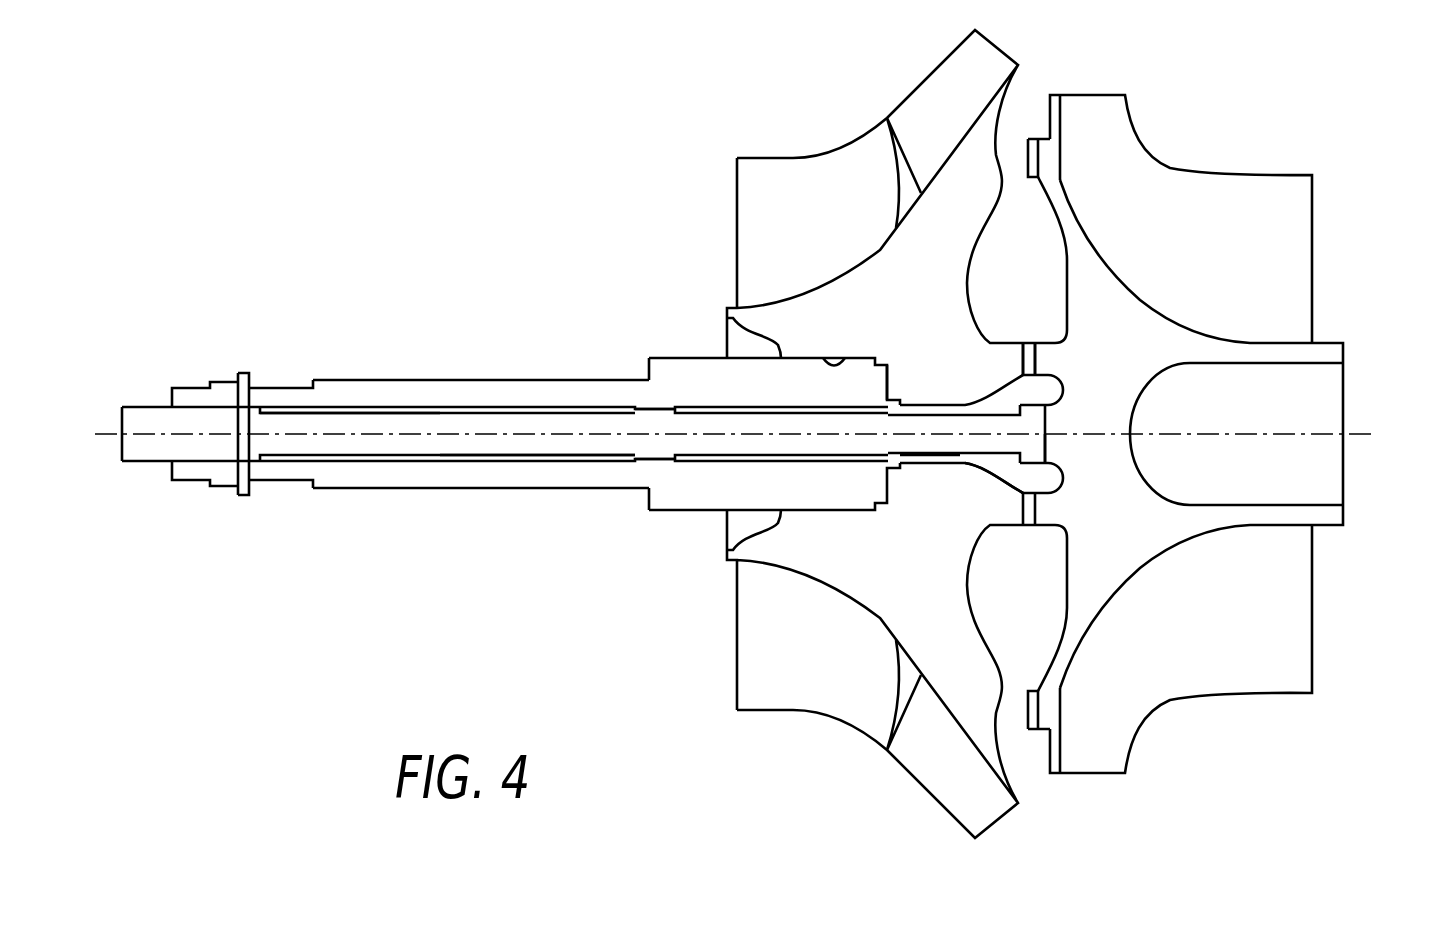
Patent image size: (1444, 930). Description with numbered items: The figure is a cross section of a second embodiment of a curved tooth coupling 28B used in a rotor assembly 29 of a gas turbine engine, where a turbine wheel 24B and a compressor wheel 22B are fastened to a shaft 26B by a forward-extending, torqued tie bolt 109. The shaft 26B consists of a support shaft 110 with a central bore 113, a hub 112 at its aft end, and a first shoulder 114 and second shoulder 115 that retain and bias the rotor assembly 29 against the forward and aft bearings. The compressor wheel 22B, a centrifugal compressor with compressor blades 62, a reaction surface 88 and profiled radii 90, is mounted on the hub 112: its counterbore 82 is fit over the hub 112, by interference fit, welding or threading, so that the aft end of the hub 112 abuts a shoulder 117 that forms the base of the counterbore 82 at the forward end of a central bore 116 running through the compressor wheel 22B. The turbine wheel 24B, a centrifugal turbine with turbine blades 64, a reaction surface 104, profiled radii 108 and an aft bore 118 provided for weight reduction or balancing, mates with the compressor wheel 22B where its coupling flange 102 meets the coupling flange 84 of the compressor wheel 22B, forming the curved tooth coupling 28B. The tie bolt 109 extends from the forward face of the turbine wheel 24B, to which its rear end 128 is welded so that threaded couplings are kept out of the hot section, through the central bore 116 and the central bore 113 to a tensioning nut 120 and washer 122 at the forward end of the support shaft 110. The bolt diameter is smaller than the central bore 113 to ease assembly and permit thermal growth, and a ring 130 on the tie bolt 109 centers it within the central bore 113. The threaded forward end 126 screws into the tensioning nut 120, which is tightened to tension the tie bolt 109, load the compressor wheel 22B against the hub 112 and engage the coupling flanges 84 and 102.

The rotor assembly 29 is at (1349, 182).
The compressor blades 62 is at (777, 180).
The turbine blades 64 is at (1160, 175).
The reaction surface 88 is at (876, 250).
The counterbore 82 is at (847, 357).
The coupling flange 84 is at (1012, 365).
The curved tooth coupling 28B is at (1031, 336).
The coupling flange 102 is at (1058, 368).
The reaction surface 104 is at (1120, 270).
The profiled radii 108 is at (1063, 388).
The shoulder 117 is at (887, 392).
The central bore 116 is at (970, 452).
The profiled radii 90 is at (1003, 480).
The rear end 128 is at (1032, 453).
The turbine wheel 24B is at (1337, 347).
The aft bore 118 is at (1322, 365).
The forward end 126 is at (138, 413).
The first shoulder 114 is at (308, 382).
The support shaft 110 is at (360, 392).
The central bore 113 is at (437, 418).
The second shoulder 115 is at (647, 372).
The compressor wheel 22B is at (732, 319).
The hub 112 is at (770, 397).
The tensioning nut 120 is at (213, 472).
The washer 122 is at (242, 495).
The shaft 26B is at (348, 528).
The tie bolt 109 is at (563, 447).
The ring 130 is at (651, 462).